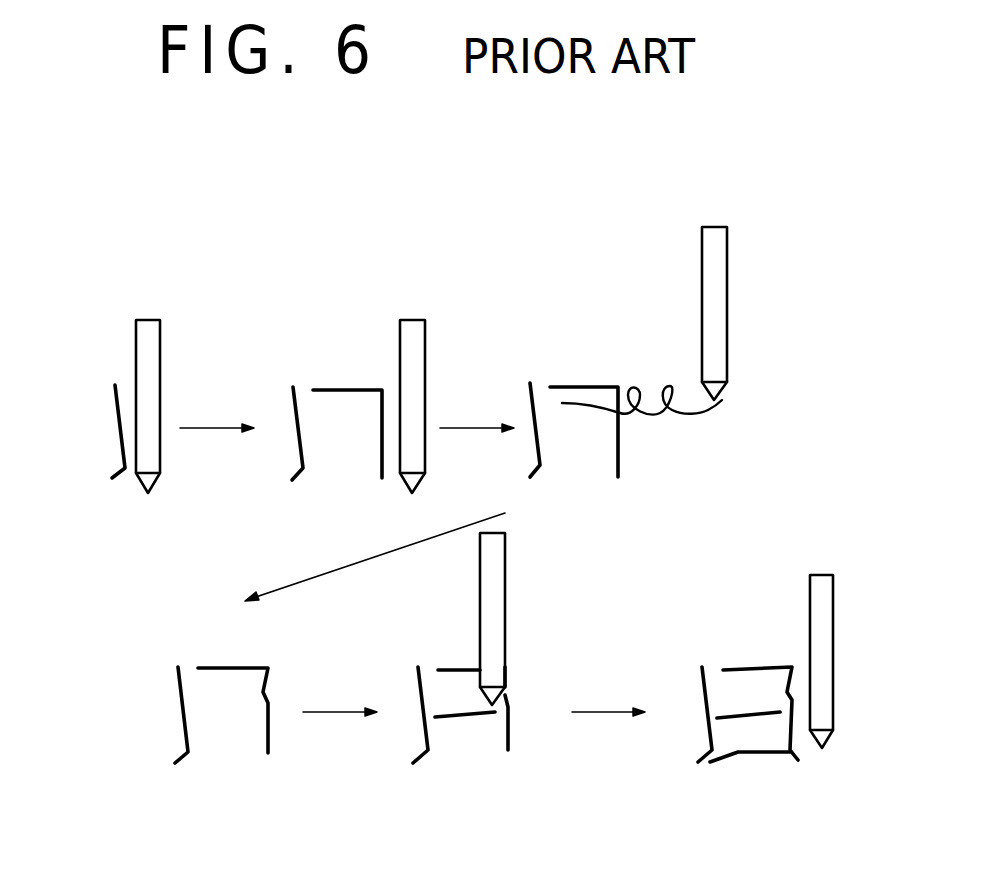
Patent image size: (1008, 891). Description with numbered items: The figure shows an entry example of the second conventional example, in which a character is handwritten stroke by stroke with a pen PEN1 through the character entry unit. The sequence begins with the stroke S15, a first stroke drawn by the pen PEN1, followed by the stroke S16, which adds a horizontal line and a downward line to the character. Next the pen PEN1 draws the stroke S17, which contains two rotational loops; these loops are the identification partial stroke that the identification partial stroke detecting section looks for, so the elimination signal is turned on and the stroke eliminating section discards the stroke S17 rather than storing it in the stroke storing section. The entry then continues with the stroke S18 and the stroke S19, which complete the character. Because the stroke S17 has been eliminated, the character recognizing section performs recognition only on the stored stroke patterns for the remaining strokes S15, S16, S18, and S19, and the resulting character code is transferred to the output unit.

The pen PEN1 is at (150, 320).
The stroke S15 is at (117, 430).
The stroke S16 is at (348, 388).
The stroke S17 is at (673, 387).
The stroke S18 is at (463, 718).
The stroke S19 is at (753, 755).